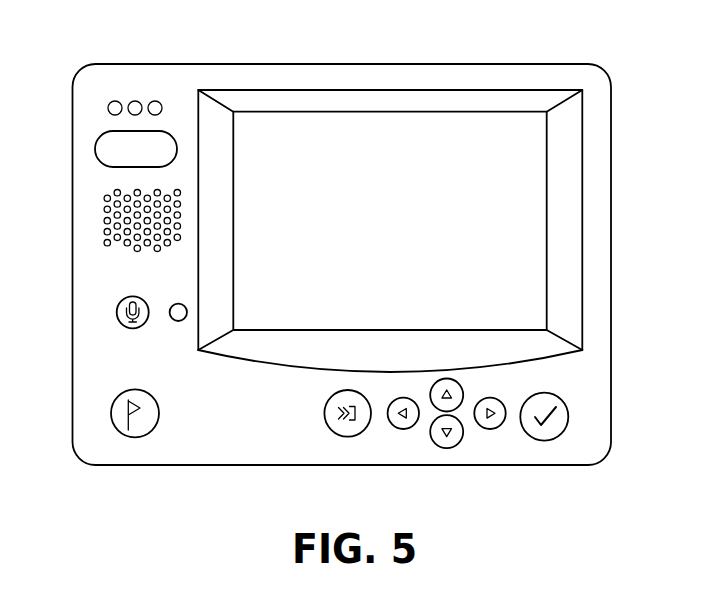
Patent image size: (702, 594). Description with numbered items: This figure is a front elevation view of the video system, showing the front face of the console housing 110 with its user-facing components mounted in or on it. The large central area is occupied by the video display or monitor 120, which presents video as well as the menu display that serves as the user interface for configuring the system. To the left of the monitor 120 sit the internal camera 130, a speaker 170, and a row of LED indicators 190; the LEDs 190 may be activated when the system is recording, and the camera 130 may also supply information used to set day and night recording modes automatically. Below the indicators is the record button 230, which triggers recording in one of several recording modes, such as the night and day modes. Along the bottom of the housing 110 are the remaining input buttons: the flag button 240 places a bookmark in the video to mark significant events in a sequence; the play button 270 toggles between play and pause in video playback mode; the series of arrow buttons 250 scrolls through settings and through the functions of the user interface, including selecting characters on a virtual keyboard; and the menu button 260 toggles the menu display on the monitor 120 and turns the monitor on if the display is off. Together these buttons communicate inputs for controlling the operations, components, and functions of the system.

The console housing 110 is at (611, 255).
The video display or monitor 120 is at (396, 231).
The internal camera 130 is at (178, 322).
The speaker 170 is at (100, 217).
The LED indicators 190 is at (133, 92).
The record button 230 is at (95, 150).
The flag button 240 is at (110, 407).
The arrow buttons 250 is at (475, 438).
The menu button 260 is at (565, 435).
The play button 270 is at (330, 435).